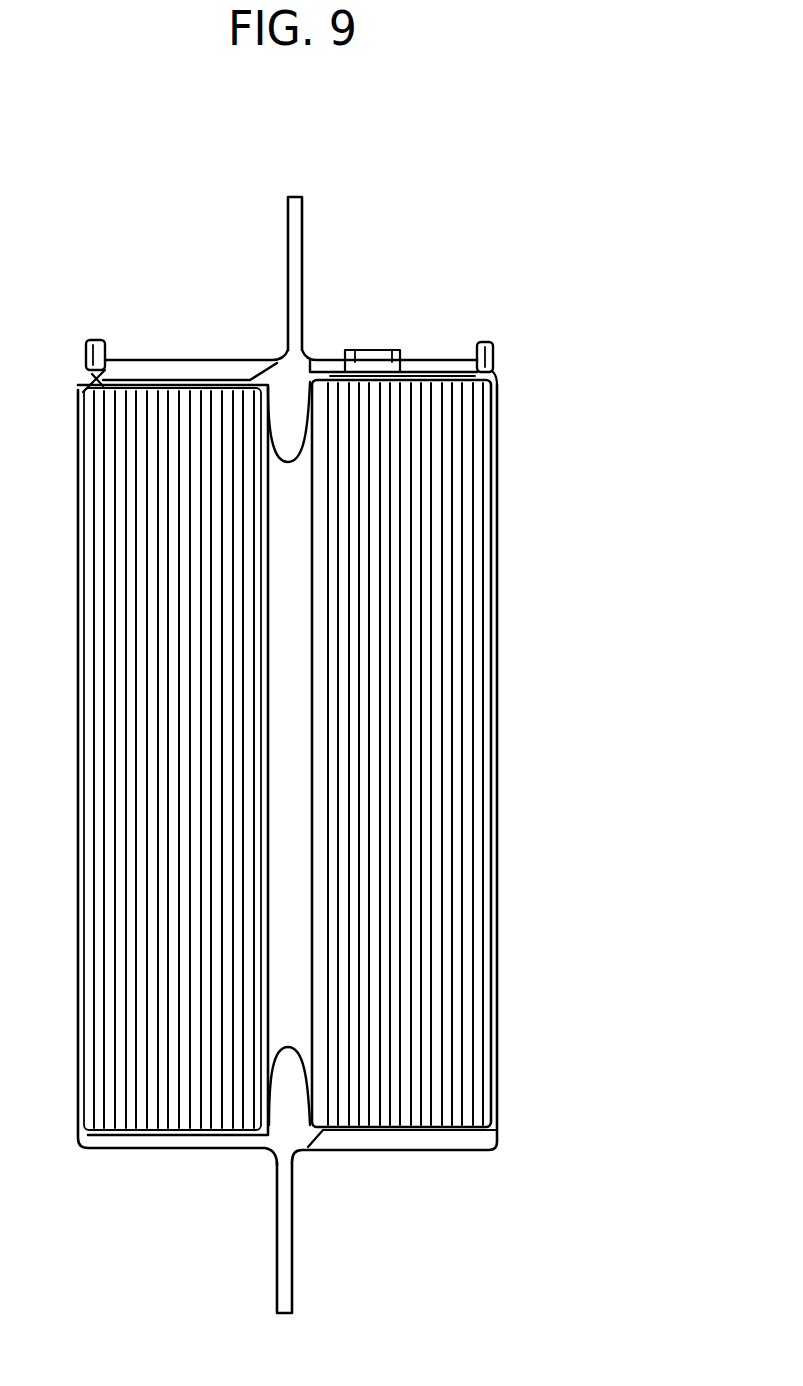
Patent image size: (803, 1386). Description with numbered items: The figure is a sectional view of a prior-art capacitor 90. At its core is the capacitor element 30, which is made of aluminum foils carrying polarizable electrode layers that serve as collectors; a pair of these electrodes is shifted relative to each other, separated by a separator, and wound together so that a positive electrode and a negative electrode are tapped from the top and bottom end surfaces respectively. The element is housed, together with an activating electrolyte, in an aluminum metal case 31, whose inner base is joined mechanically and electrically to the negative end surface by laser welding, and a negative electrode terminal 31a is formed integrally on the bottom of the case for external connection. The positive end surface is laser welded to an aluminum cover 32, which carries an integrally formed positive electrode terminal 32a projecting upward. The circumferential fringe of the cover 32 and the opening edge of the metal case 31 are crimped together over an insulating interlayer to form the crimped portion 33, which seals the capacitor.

The capacitor 90 is at (458, 310).
The capacitor element 30 is at (437, 688).
The metal case 31 is at (498, 888).
The negative electrode terminal 31a is at (292, 1272).
The cover 32 is at (195, 358).
The positive electrode terminal 32a is at (304, 245).
The crimped portion 33 is at (495, 348).